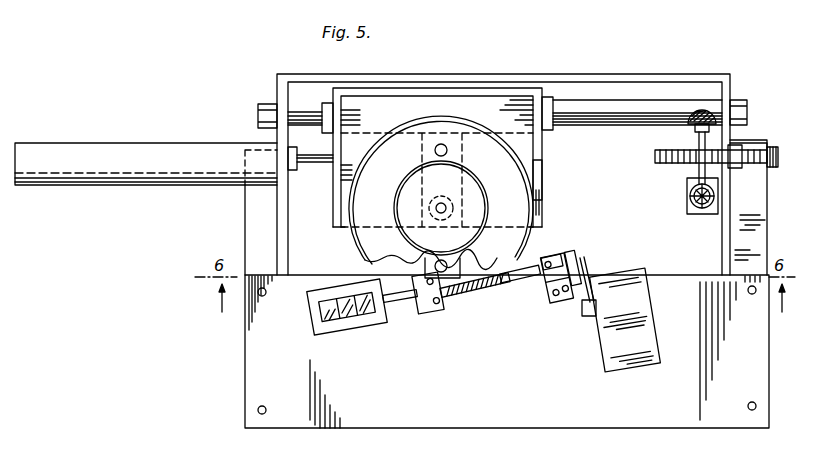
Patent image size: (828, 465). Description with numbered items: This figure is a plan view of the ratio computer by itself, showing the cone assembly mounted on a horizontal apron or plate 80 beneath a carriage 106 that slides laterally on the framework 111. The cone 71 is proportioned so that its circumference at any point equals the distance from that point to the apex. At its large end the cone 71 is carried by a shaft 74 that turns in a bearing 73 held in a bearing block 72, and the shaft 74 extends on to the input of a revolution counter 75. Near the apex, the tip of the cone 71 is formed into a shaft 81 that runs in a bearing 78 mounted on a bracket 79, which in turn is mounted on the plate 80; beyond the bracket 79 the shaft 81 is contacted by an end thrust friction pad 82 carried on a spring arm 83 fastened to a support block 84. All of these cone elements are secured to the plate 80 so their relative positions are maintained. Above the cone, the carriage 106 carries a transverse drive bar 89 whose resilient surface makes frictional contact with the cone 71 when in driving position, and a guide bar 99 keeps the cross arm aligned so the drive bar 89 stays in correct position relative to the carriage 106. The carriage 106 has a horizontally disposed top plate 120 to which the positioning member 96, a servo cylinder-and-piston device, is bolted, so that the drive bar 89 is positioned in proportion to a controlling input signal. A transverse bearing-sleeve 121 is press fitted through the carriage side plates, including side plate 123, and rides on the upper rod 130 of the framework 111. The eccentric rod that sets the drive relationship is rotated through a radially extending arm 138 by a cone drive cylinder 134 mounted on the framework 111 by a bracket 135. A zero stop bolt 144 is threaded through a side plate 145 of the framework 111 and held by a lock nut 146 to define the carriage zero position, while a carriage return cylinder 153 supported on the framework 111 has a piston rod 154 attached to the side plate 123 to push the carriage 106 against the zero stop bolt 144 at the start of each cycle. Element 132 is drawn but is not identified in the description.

The framework 111 is at (276, 88).
The carriage return cylinder 153 is at (146, 169).
The piston rod 154 is at (306, 170).
The side plate 123 is at (334, 214).
The top plate 120 is at (532, 140).
The positioning member 96 is at (382, 199).
The guide bar 99 is at (435, 150).
The drive bar 89 is at (443, 260).
The carriage 106 is at (545, 178).
The plate 132 is at (545, 201).
The transverse bearing-sleeve 121 is at (552, 92).
The upper rod 130 is at (618, 100).
The radially extending arm 138 is at (690, 132).
The zero stop bolt 144 is at (676, 166).
The cone drive cylinder 134 is at (690, 195).
The bracket 135 is at (694, 214).
The side plate 145 is at (726, 185).
The lock nut 146 is at (740, 146).
The plate 80 is at (508, 383).
The revolution counter 75 is at (330, 328).
The shaft 74 is at (393, 306).
The bearing block 72 is at (422, 316).
The bearing 73 is at (447, 308).
The cone 71 is at (498, 290).
The bracket 79 is at (554, 298).
The bearing 78 is at (554, 256).
The shaft 81 is at (576, 255).
The end thrust friction pad 82 is at (585, 272).
The spring arm 83 is at (584, 306).
The support block 84 is at (642, 311).